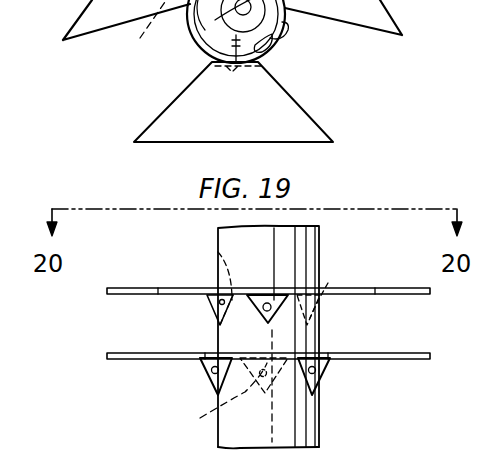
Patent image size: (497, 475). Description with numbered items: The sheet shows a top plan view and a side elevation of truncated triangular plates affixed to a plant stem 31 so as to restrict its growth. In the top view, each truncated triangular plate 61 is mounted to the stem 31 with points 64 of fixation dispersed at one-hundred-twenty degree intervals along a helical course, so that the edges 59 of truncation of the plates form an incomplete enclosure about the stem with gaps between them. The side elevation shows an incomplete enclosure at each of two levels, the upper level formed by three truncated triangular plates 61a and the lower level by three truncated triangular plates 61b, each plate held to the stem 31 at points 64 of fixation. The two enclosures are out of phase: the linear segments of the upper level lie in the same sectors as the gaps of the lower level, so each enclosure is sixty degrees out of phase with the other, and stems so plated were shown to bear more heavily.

In FIG. 18, the stem 31 is at (201, 39).
In FIG. 19, the stem 31 is at (321, 437).
In FIG. 18, the edges of truncation 59 is at (300, 26).
In FIG. 18, the truncated triangular plate 61 is at (256, 125).
In FIG. 19, the truncated triangular plate 61a is at (134, 287).
In FIG. 19, the truncated triangular plate 61b is at (147, 360).
In FIG. 18, the points of fixation 64 is at (312, 83).
In FIG. 19, the points of fixation 64 is at (217, 252).